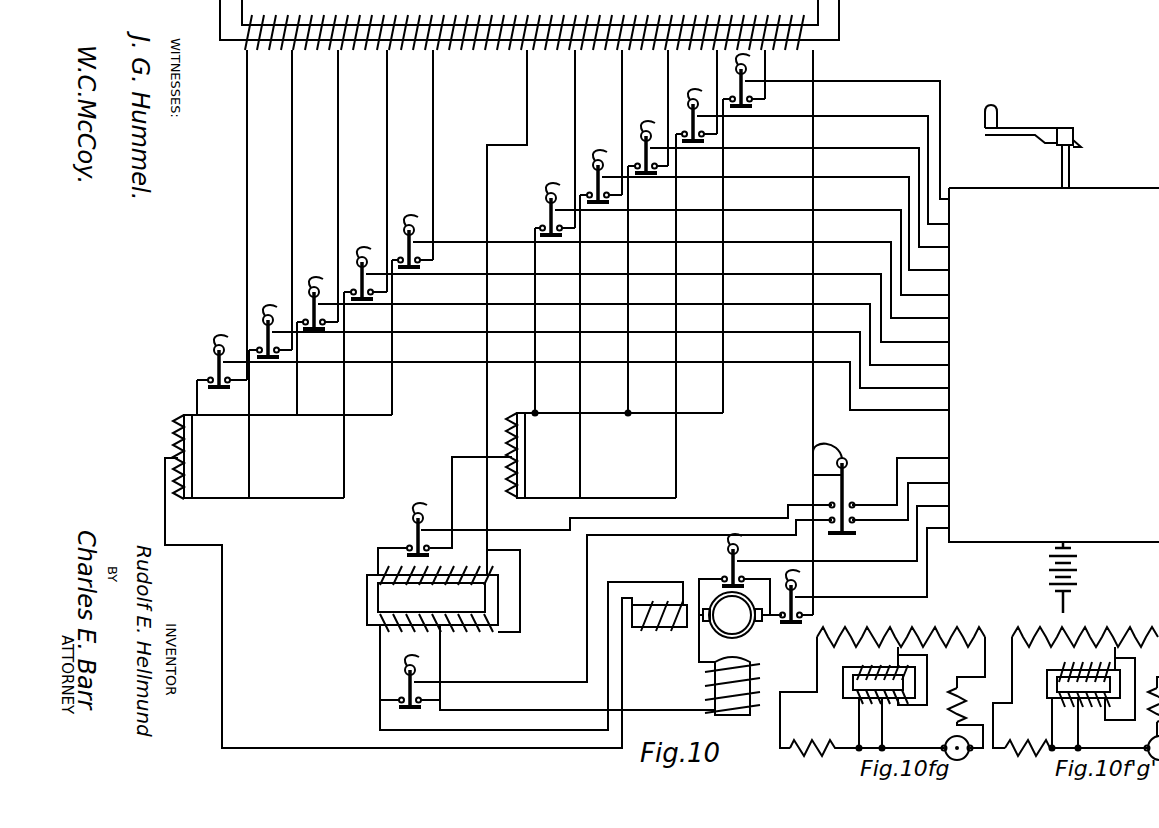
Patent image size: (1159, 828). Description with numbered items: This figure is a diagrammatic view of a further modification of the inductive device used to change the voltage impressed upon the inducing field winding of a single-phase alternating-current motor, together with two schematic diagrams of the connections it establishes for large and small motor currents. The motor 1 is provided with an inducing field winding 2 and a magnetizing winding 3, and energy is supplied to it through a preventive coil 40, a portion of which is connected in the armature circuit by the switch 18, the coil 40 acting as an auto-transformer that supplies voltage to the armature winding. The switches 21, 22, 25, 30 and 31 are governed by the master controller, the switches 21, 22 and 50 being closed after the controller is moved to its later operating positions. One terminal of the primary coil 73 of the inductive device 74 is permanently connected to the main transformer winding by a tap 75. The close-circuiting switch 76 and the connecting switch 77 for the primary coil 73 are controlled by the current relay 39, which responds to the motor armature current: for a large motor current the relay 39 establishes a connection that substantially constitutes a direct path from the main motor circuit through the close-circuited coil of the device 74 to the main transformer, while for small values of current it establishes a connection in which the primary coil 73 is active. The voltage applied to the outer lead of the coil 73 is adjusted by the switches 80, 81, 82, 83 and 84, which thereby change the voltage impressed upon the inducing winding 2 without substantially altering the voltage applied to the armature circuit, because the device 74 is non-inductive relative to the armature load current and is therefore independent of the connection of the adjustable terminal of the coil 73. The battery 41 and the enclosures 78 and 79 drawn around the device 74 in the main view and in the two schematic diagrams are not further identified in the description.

In FIG. 10, the motor 1 is at (772, 654).
In FIG. 10, the inducing field winding 2 is at (664, 633).
In FIG. 10, the magnetizing winding 3 is at (712, 692).
In FIG. 10, the switch 18 is at (725, 565).
In FIG. 10, the switch 21 is at (222, 352).
In FIG. 10, the switch 22 is at (270, 316).
In FIG. 10, the switch 25 is at (317, 290).
In FIG. 10, the switch 30 is at (365, 260).
In FIG. 10, the switch 31 is at (412, 227).
In FIG. 10, the current relay 39 is at (849, 471).
In FIG. 10, the preventive coil 40 is at (190, 464).
In FIG. 10, the battery 41 is at (1083, 574).
In FIG. 10, the switch 50 is at (806, 588).
In FIG. 10, the primary coil 73 is at (441, 572).
In FIG. 10f'g', the primary coil 73 is at (1060, 658).
In FIG. 10, the inductive device 74 is at (353, 614).
In FIG. 10fg, the inductive device 74 is at (844, 690).
In FIG. 10f'g', the inductive device 74 is at (1047, 687).
In FIG. 10, the tap 75 is at (471, 502).
In FIG. 10fg, the tap 75 is at (899, 659).
In FIG. 10, the close-circuiting switch 76 is at (402, 676).
In FIG. 10, the connecting switch 77 is at (403, 539).
In FIG. 10, the casing 78 is at (521, 576).
In FIG. 10fg, the casing 79 is at (928, 675).
In FIG. 10f'g', the casing 79 is at (1135, 677).
In FIG. 10, the switch 80 is at (554, 199).
In FIG. 10, the switch 81 is at (601, 166).
In FIG. 10, the switch 82 is at (648, 137).
In FIG. 10, the switch 83 is at (696, 106).
In FIG. 10, the switch 84 is at (756, 69).